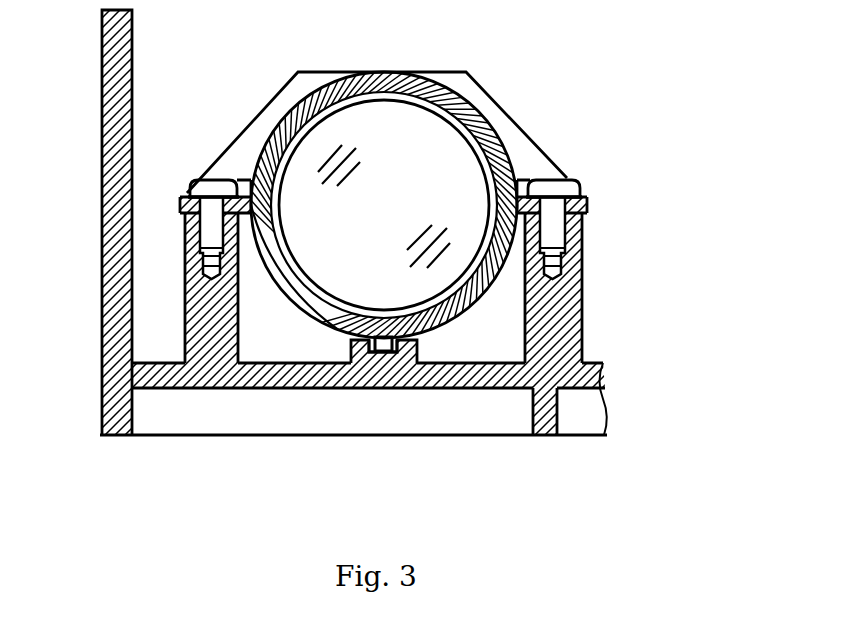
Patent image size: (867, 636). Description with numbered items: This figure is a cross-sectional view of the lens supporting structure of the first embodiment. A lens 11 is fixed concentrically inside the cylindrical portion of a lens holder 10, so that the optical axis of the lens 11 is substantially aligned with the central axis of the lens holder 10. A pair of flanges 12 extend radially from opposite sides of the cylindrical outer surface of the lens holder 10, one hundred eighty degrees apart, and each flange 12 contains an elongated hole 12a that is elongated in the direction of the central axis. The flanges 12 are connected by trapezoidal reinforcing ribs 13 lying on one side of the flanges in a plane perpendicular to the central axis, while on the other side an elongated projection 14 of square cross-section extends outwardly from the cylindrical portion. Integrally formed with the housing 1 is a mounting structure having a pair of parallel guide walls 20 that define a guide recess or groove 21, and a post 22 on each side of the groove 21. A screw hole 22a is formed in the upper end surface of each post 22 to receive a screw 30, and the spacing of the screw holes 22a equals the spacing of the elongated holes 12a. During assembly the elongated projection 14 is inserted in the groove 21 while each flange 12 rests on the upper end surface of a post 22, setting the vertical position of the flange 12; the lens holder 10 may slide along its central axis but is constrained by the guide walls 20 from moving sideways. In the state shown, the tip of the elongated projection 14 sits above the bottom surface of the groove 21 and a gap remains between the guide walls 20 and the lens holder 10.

The housing 1 is at (103, 113).
The lens holder 10 is at (503, 143).
The lens 11 is at (433, 150).
The flange 12 is at (180, 203).
The elongated hole 12a is at (180, 226).
The trapezoidal reinforcing rib 13 is at (263, 118).
The elongated projection 14 is at (381, 350).
The guide wall 20 is at (315, 364).
The guide recess or groove 21 is at (378, 343).
The post 22 is at (183, 344).
The screw hole 22a is at (180, 249).
The screw 30 is at (234, 182).